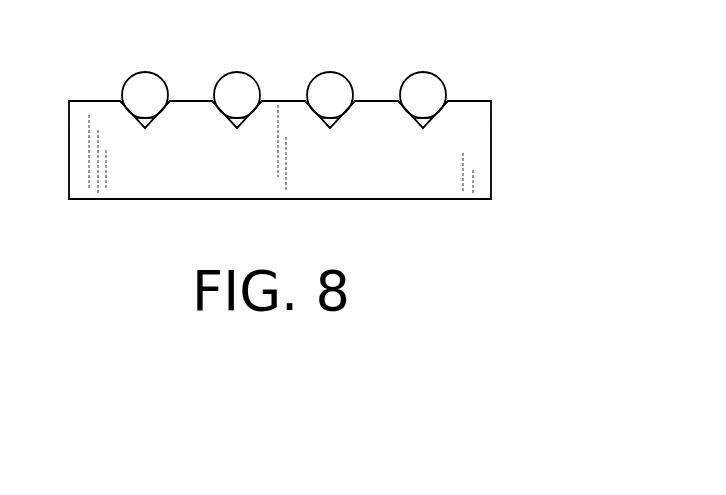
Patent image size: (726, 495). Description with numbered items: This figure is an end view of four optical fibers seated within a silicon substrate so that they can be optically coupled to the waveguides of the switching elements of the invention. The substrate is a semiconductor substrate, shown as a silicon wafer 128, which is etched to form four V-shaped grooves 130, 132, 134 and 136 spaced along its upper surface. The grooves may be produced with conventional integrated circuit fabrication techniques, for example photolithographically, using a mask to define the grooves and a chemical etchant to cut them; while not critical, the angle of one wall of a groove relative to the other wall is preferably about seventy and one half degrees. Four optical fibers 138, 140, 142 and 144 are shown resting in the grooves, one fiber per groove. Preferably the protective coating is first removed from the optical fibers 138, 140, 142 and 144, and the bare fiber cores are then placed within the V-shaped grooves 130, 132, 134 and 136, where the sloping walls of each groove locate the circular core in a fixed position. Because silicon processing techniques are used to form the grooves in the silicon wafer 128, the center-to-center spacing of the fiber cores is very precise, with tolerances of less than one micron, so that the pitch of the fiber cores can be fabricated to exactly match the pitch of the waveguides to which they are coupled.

The silicon wafer 128 is at (481, 138).
The V-shaped groove 130 is at (138, 121).
The V-shaped groove 132 is at (230, 121).
The V-shaped groove 134 is at (323, 121).
The V-shaped groove 136 is at (416, 121).
The optical fiber 138 is at (143, 85).
The optical fiber 140 is at (235, 85).
The optical fiber 142 is at (328, 85).
The optical fiber 144 is at (421, 85).